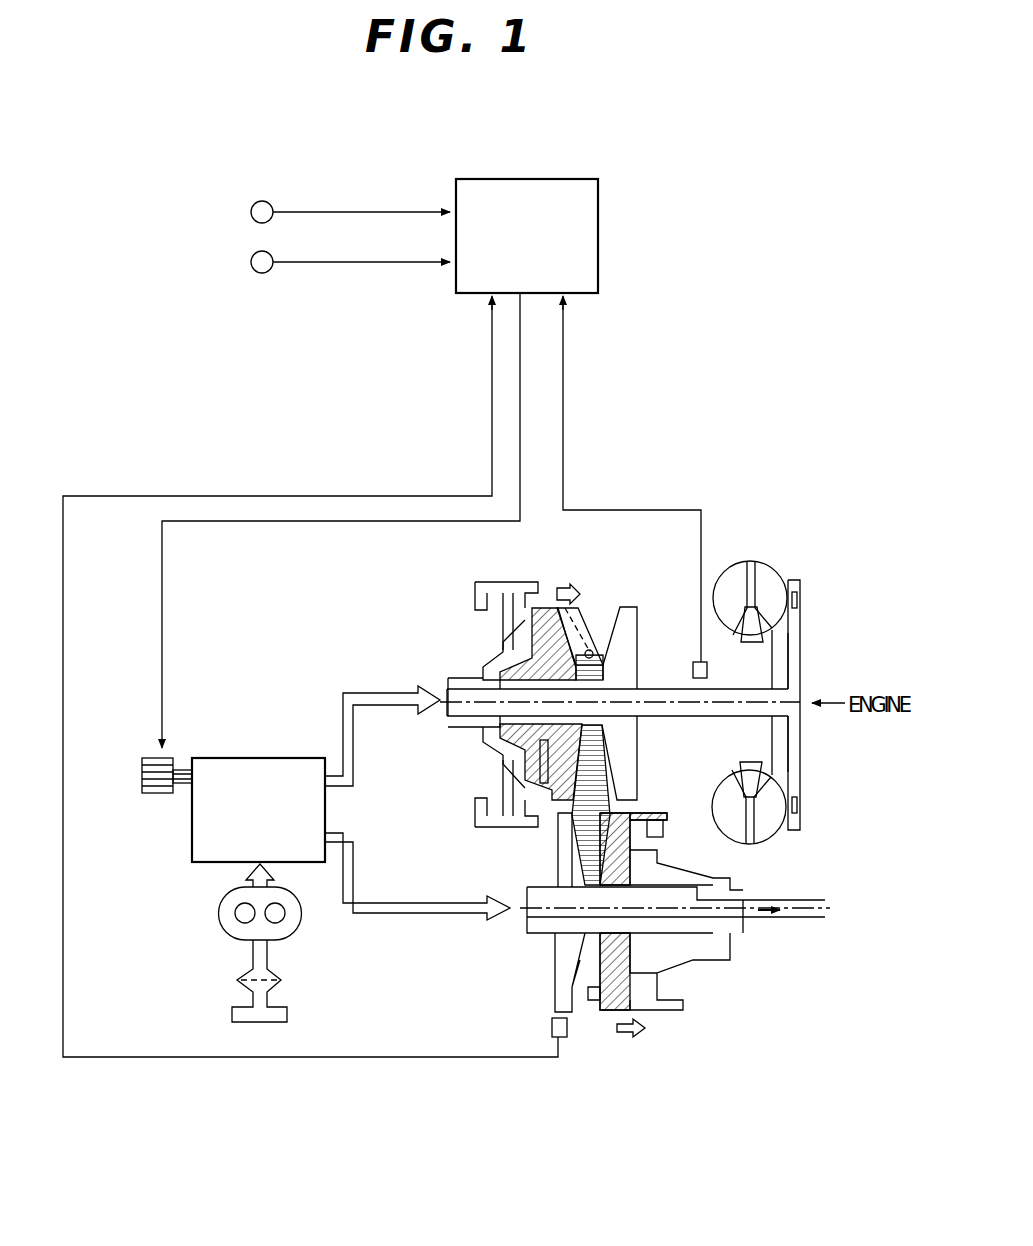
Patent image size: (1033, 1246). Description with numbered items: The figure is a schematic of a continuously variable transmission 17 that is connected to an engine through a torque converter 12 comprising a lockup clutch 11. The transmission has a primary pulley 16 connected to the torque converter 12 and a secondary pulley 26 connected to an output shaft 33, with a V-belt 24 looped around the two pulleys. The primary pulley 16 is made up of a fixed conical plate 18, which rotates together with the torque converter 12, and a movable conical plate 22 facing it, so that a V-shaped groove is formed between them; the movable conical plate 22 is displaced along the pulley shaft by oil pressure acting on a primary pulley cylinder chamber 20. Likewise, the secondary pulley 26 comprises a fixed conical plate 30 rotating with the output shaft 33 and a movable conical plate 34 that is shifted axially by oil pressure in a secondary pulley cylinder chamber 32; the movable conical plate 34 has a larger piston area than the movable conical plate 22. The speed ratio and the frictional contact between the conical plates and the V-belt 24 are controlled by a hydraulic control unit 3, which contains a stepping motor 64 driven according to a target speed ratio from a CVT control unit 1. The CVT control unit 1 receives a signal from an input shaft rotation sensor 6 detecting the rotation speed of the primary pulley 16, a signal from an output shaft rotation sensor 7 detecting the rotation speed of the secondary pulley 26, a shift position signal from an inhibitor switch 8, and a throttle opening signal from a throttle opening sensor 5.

The CVT control unit 1 is at (476, 178).
The hydraulic control unit 3 is at (192, 850).
The throttle opening sensor 5 is at (253, 253).
The input shaft rotation sensor 6 is at (708, 672).
The output shaft rotation sensor 7 is at (568, 1040).
The inhibitor switch 8 is at (255, 203).
The lockup clutch 11 is at (796, 772).
The torque converter 12 is at (756, 562).
The primary pulley 16 is at (557, 707).
The continuously variable transmission 17 is at (683, 947).
The fixed conical plate 18 is at (610, 626).
The primary pulley cylinder chamber 20 is at (525, 634).
The movable conical plate 22 is at (515, 743).
The V-belt 24 is at (612, 778).
The secondary pulley 26 is at (548, 845).
The fixed conical plate 30 is at (572, 1010).
The secondary pulley cylinder chamber 32 is at (697, 950).
The output shaft 33 is at (800, 918).
The movable conical plate 34 is at (663, 833).
The stepping motor 64 is at (150, 757).